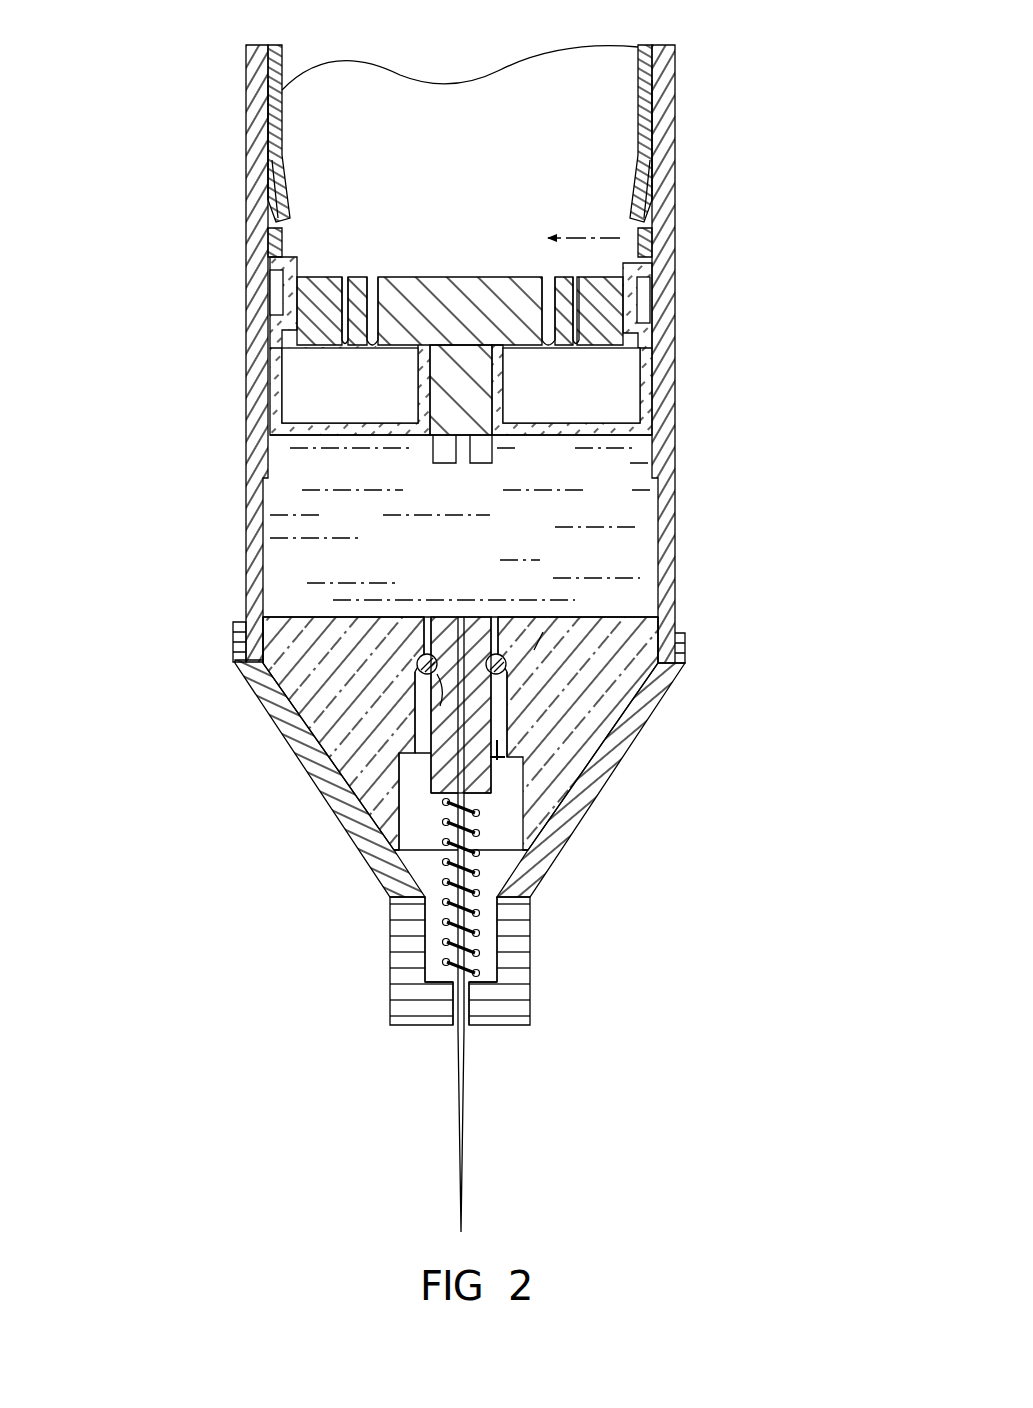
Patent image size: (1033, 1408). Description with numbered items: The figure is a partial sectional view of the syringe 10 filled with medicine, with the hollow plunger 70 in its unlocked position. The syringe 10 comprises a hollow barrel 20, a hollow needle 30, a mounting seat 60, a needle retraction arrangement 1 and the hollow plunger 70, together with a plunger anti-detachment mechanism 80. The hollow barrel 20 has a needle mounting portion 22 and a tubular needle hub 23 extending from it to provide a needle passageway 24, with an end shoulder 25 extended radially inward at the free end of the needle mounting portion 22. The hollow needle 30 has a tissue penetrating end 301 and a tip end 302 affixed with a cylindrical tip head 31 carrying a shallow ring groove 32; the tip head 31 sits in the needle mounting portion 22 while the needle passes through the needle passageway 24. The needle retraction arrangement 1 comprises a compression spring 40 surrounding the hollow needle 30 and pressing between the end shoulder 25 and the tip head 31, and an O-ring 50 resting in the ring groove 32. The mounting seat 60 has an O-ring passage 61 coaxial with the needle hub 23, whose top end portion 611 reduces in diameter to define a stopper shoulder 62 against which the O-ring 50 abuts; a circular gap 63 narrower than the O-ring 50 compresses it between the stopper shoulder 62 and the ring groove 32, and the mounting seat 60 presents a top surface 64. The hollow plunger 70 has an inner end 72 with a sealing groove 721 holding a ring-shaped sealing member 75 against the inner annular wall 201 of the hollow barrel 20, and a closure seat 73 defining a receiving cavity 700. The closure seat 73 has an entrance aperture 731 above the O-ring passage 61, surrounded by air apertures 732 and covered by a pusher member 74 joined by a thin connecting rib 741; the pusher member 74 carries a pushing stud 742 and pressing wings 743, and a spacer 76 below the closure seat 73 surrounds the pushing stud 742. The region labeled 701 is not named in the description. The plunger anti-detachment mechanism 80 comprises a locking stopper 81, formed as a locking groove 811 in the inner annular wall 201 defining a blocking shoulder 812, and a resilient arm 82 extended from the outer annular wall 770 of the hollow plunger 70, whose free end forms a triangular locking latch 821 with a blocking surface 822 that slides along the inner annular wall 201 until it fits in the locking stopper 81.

The needle retraction arrangement 1 is at (463, 616).
The syringe 10 is at (446, 884).
The hollow barrel 20 is at (668, 467).
The inner annular wall 201 is at (275, 88).
The needle mounting portion 22 is at (587, 808).
The tubular needle hub 23 is at (449, 961).
The needle passageway 24 is at (452, 1012).
The end shoulder 25 is at (432, 960).
The hollow needle 30 is at (476, 924).
The tissue penetrating end 301 is at (517, 1131).
The tip end 302 is at (240, 650).
The tip head 31 is at (400, 850).
The ring groove 32 is at (427, 714).
The compression spring 40 is at (450, 862).
The O-ring 50 is at (417, 681).
The mounting seat 60 is at (446, 705).
The O-ring passage 61 is at (683, 663).
The top end portion 611 is at (517, 616).
The stopper shoulder 62 is at (519, 682).
The circular gap 63 is at (530, 826).
The top surface 64 is at (360, 610).
The hollow plunger 70 is at (430, 151).
The receiving cavity 700 is at (640, 237).
The cavity 701 is at (320, 395).
The inner end 72 is at (458, 351).
The sealing groove 721 is at (300, 262).
The closure seat 73 is at (600, 308).
The entrance aperture 731 is at (345, 300).
The air apertures 732 is at (350, 318).
The pusher member 74 is at (472, 292).
The connecting rib 741 is at (552, 352).
The pushing stud 742 is at (463, 462).
The pressing wings 743 is at (437, 452).
The sealing member 75 is at (285, 290).
The spacer 76 is at (345, 436).
The outer annular wall 770 is at (650, 141).
The plunger anti-detachment mechanism 80 is at (463, 331).
The locking stopper 81 is at (493, 524).
The locking groove 811 is at (662, 504).
The blocking shoulder 812 is at (662, 482).
The resilient arm 82 is at (417, 133).
The locking latch 821 is at (268, 217).
The blocking surface 822 is at (268, 205).